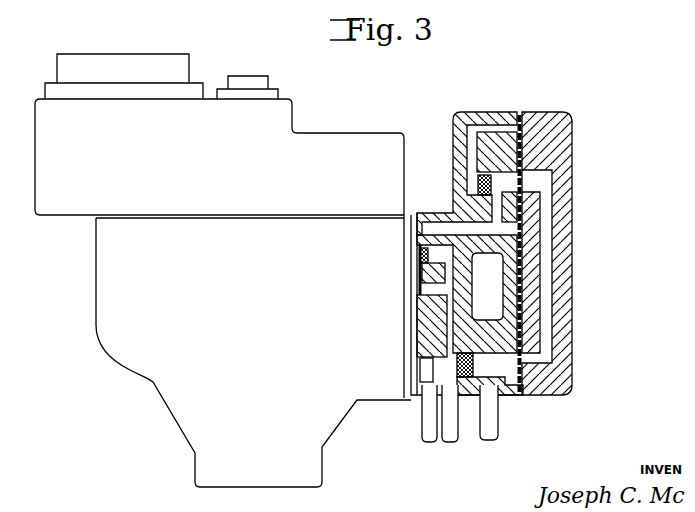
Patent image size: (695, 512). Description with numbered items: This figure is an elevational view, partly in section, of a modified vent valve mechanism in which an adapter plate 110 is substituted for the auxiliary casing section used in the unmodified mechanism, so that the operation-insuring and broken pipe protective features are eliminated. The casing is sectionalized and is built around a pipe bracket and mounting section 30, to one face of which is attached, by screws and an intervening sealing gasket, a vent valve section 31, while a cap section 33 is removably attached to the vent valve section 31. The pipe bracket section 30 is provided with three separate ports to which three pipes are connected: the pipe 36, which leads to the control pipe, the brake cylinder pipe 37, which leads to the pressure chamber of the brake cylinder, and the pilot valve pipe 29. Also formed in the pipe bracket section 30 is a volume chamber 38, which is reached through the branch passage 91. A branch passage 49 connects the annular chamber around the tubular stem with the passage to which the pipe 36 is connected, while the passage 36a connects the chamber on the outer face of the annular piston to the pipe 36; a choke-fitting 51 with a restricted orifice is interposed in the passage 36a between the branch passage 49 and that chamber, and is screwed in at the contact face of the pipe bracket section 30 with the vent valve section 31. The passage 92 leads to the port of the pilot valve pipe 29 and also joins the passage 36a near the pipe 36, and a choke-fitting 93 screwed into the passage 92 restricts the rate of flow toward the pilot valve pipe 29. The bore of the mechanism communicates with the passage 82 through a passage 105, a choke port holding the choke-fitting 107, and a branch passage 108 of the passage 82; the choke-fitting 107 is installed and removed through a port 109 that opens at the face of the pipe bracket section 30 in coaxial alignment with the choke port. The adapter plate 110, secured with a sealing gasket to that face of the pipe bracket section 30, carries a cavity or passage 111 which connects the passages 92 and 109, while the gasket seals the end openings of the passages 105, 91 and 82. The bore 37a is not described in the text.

The cap section 33 is at (337, 143).
The vent valve section 31 is at (113, 287).
The pipe bracket and mounting section 30 is at (485, 112).
The passage 105 is at (468, 128).
The choke-fitting 107 is at (480, 185).
The passage 82 is at (443, 229).
The port 109 is at (505, 183).
The branch passage 108 is at (495, 210).
The volume chamber 38 is at (498, 277).
The choke-fitting 51 is at (420, 257).
The branch passage 49 is at (438, 289).
The passage 36a is at (420, 320).
The choke-fitting 93 is at (455, 354).
The bore 37a is at (425, 372).
The passage 92 is at (508, 366).
The adapter plate 110 is at (559, 99).
The cavity or passage 111 is at (553, 331).
The branch passage 91 is at (505, 282).
The brake cylinder pipe 37 is at (433, 433).
The pipe 36 is at (452, 433).
The pilot valve pipe 29 is at (492, 433).